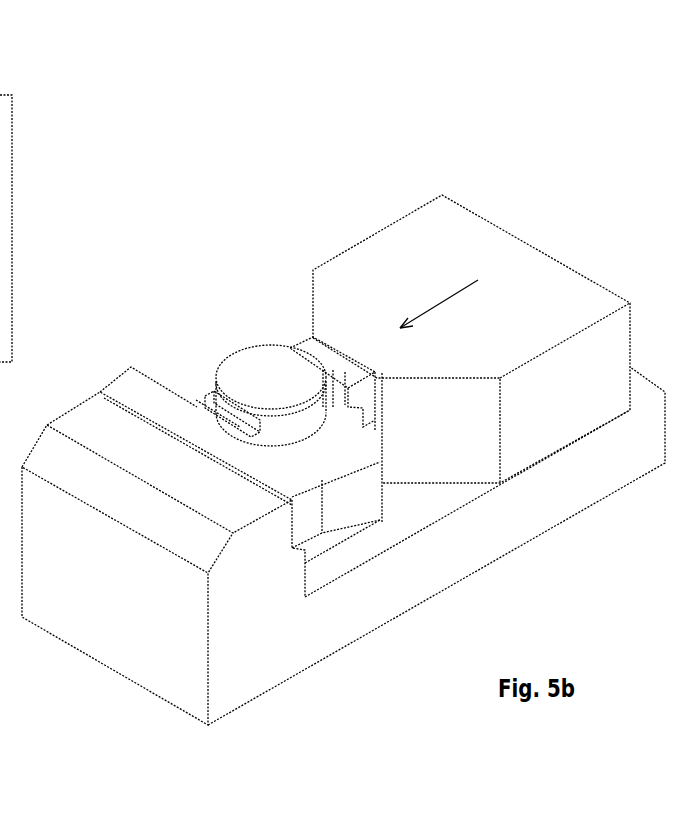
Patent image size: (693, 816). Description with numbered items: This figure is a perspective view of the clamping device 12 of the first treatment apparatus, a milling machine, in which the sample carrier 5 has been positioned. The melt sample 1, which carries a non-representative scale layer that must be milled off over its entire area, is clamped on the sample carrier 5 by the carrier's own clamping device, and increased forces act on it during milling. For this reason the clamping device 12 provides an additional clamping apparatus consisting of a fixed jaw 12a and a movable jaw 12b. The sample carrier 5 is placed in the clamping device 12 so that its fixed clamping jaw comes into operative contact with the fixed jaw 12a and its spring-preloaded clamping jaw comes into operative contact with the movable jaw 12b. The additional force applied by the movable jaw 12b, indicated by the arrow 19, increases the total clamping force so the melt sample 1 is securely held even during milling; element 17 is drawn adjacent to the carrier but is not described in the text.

The melt sample 1 is at (248, 363).
The sample carrier 5 is at (331, 435).
The clamping device 12 is at (506, 160).
The fixed jaw 12a is at (123, 388).
The movable jaw 12b is at (537, 272).
The holder bracket 17 is at (240, 460).
The arrow 19 is at (438, 293).